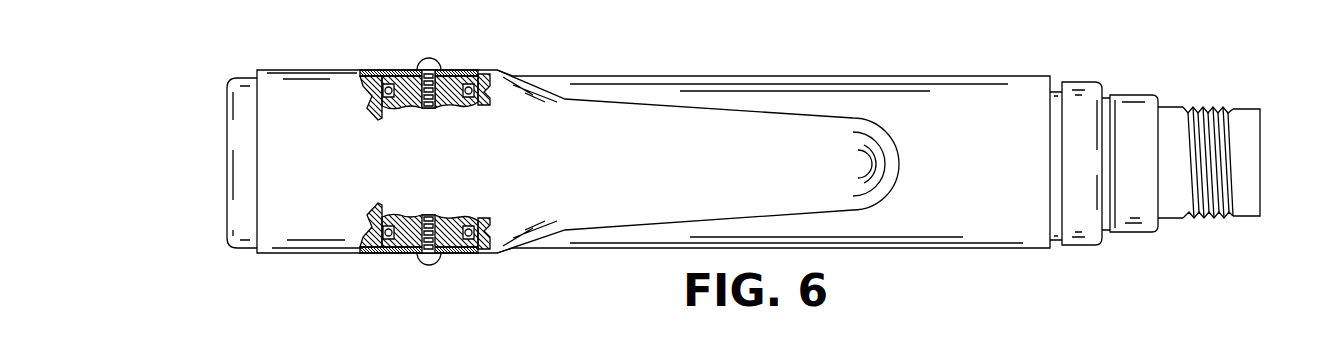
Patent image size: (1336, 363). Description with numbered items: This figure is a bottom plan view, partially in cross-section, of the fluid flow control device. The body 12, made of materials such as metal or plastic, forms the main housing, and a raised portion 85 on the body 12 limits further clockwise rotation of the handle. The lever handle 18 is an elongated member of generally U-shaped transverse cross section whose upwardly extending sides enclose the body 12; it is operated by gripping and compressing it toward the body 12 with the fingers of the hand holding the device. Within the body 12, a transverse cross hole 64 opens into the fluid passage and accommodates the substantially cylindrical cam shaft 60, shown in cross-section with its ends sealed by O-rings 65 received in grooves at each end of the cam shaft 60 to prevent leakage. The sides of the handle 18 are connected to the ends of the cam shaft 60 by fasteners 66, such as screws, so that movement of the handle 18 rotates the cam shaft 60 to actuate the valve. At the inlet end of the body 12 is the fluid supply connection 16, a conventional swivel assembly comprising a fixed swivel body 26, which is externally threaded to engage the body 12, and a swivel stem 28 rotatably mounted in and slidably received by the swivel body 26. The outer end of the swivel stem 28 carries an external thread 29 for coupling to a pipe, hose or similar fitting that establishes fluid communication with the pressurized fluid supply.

The body portion 12 is at (978, 100).
The fluid supply connection 16 is at (1238, 103).
The lever handle 18 is at (810, 207).
The swivel body 26 is at (1078, 80).
The swivel stem 28 is at (1142, 94).
The external thread 29 is at (1208, 220).
The cam shaft 60 is at (378, 86).
The transverse cross hole 64 is at (391, 84).
The O-ring 65 is at (484, 93).
The fasteners 66 is at (432, 58).
The raised portion 85 is at (237, 132).